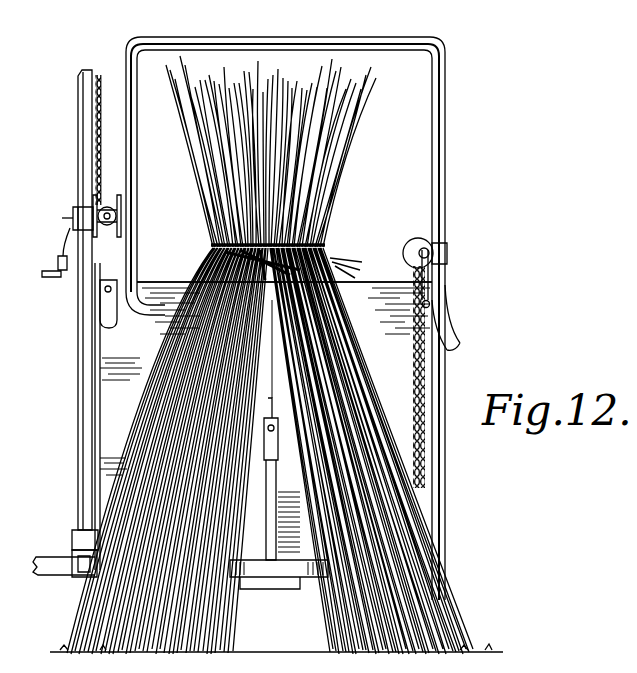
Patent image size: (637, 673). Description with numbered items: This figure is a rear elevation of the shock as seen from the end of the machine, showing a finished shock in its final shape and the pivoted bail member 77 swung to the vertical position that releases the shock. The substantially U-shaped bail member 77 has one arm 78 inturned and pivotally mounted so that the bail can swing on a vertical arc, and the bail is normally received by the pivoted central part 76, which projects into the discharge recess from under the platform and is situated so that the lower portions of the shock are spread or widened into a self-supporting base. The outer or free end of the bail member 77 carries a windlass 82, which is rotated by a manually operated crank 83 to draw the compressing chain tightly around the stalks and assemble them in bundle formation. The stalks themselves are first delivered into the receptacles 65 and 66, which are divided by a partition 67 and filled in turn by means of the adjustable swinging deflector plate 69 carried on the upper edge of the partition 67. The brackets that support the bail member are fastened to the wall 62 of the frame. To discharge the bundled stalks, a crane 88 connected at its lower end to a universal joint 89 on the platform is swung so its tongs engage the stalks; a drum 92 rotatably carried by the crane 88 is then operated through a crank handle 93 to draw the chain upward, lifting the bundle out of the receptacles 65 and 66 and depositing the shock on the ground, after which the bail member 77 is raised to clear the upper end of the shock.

The bail member 77 is at (433, 128).
The windlass 82 is at (426, 238).
The crank 83 is at (430, 289).
The crane 88 is at (82, 178).
The arm 78 is at (127, 203).
The drum 92 is at (116, 217).
The crank handle 93 is at (58, 278).
The receptacle 65 is at (120, 390).
The wall 62 is at (100, 420).
The universal joint 89 is at (75, 578).
The partition 67 is at (265, 505).
The central part 76 is at (275, 580).
The deflector plate 69 is at (283, 402).
The receptacle 66 is at (397, 393).